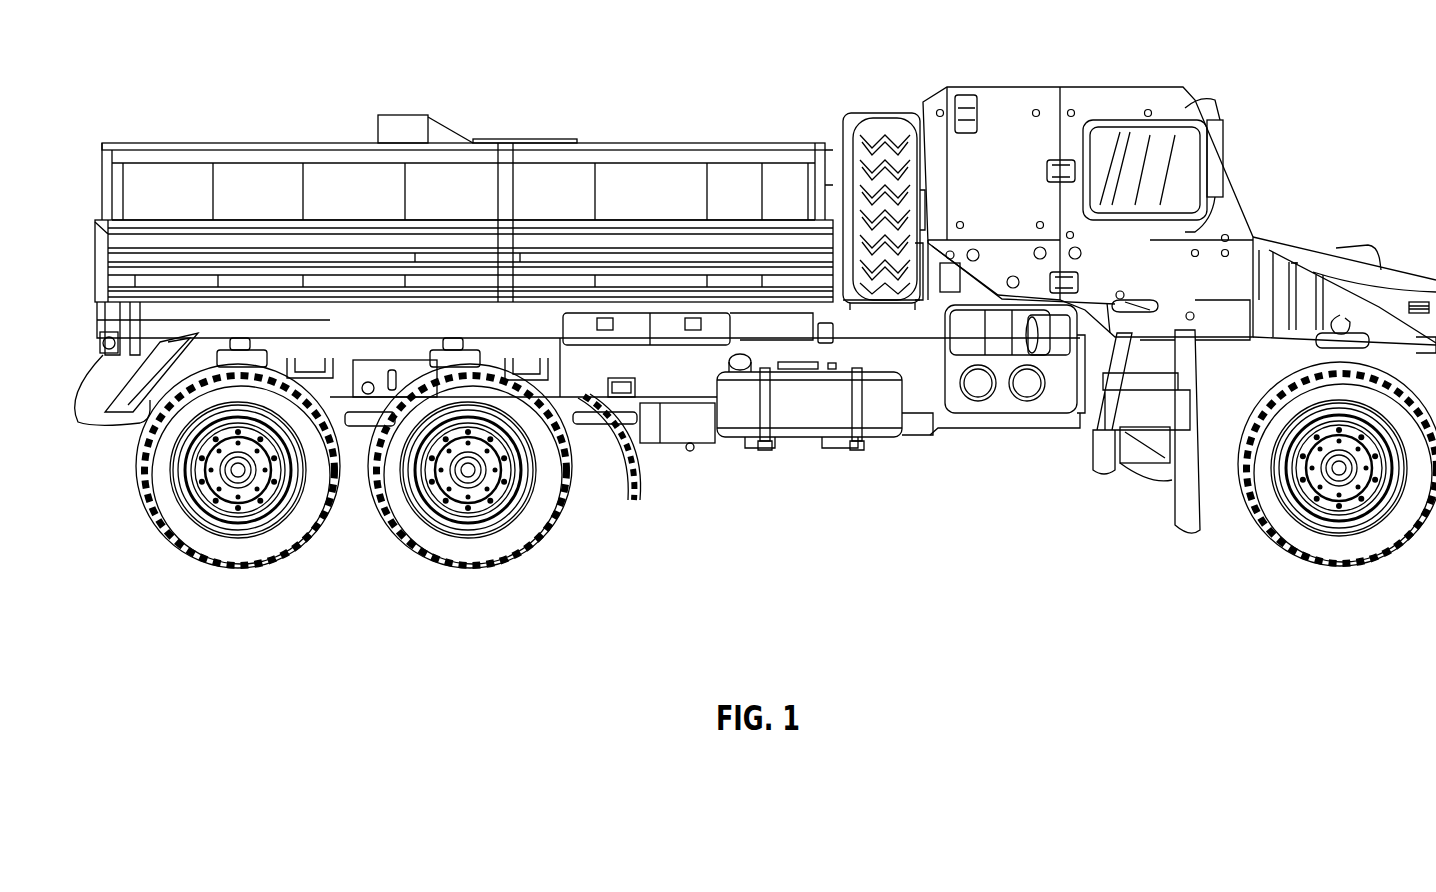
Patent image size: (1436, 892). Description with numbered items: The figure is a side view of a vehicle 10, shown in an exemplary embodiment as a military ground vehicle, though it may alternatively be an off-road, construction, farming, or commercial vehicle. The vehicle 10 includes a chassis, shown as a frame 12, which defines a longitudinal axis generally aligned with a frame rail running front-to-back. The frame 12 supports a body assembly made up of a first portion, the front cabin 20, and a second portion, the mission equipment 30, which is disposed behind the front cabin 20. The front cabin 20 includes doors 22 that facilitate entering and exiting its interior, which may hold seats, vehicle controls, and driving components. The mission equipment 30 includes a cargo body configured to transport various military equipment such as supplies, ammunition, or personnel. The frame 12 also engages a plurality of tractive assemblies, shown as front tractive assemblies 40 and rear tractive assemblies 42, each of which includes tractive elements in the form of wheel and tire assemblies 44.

The vehicle 10 is at (168, 46).
The frame 12 is at (644, 383).
The front cabin 20 is at (1075, 68).
The doors 22 is at (1187, 257).
The mission equipment 30 is at (555, 113).
The front tractive assemblies 40 is at (1349, 578).
The rear tractive assemblies 42 is at (239, 580).
The wheel and tire assemblies 44 is at (205, 540).